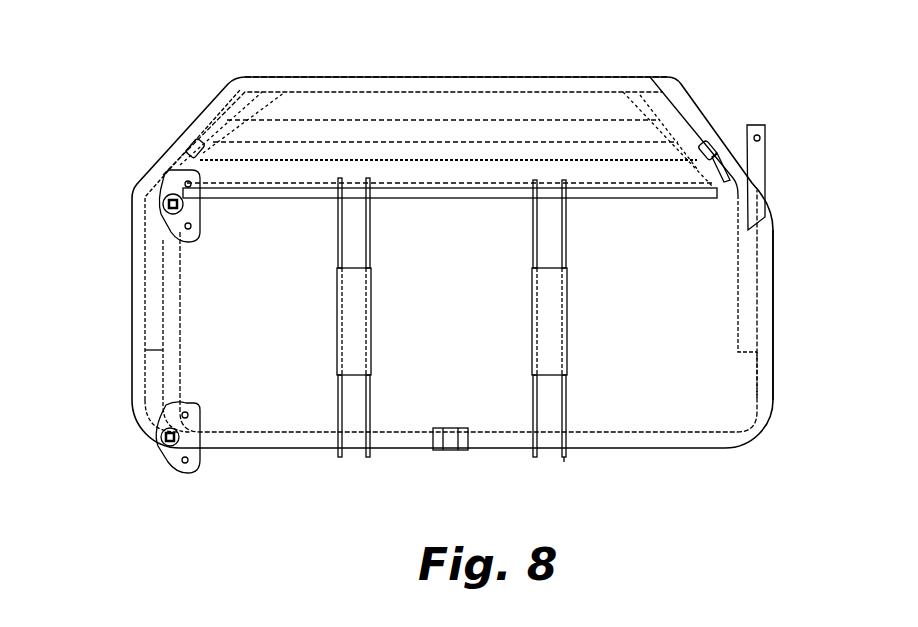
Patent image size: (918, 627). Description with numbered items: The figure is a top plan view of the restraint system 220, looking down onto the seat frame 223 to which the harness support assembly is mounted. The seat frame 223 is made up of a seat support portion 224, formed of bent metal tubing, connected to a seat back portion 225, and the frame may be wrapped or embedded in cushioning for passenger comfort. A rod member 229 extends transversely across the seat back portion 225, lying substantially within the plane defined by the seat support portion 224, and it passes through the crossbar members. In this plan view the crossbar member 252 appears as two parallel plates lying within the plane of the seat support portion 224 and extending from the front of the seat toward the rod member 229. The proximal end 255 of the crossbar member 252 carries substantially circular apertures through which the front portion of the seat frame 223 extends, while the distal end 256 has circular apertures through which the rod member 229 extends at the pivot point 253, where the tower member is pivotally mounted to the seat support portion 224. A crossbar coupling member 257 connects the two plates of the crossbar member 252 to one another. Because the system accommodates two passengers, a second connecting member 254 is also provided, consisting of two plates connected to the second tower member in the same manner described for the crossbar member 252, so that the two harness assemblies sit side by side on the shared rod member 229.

The restraint system 220 is at (103, 206).
The seat frame 223 is at (767, 246).
The seat support portion 224 is at (767, 322).
The seat back portion 225 is at (352, 84).
The rod member 229 is at (448, 198).
The crossbar member 252 is at (532, 405).
The pivot point 253 is at (353, 180).
The second connecting member 254 is at (370, 254).
The proximal end 255 is at (563, 460).
The distal end 256 is at (567, 185).
The crossbar coupling member 257 is at (540, 308).